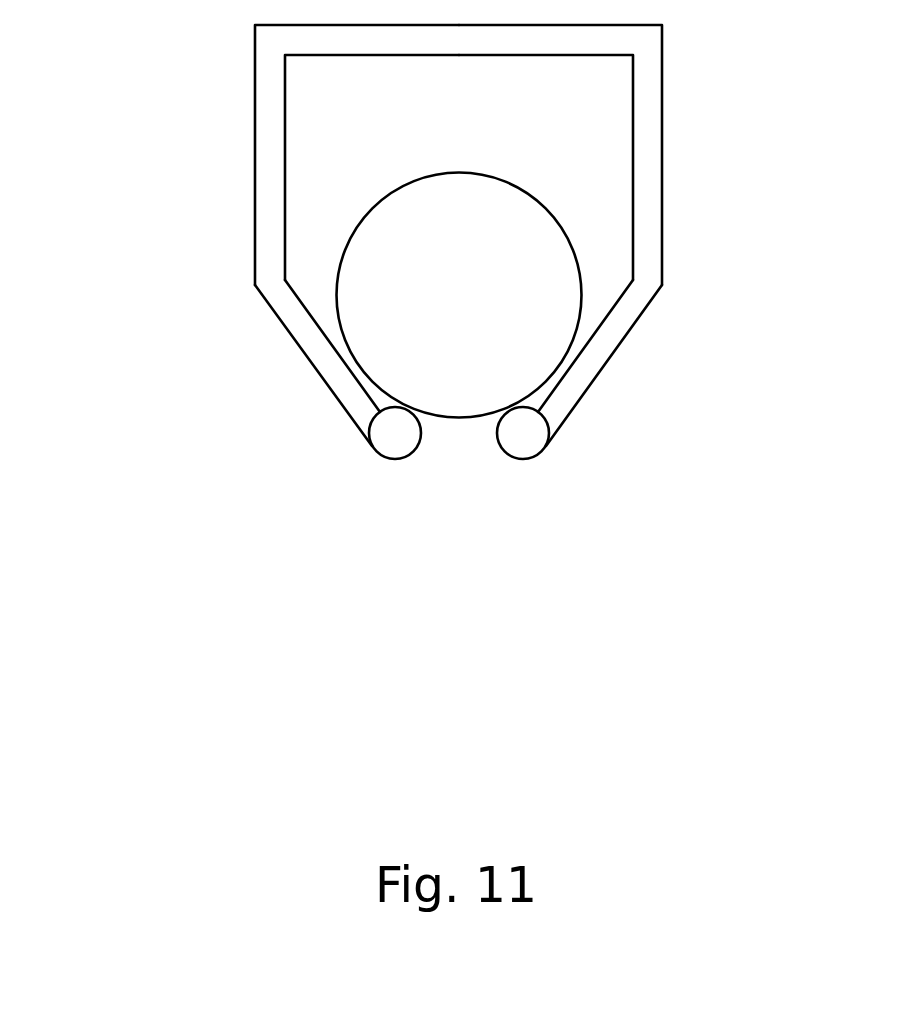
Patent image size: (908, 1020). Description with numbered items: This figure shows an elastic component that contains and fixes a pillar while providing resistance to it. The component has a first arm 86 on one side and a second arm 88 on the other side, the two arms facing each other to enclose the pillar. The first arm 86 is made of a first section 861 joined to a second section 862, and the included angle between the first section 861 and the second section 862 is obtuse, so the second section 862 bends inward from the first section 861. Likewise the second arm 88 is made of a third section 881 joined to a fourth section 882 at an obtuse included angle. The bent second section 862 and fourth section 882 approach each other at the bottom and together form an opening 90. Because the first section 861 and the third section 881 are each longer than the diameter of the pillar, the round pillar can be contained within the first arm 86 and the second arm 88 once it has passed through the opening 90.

The first arm 86 is at (245, 242).
The first section 861 is at (272, 163).
The second section 862 is at (299, 369).
The second arm 88 is at (673, 242).
The third section 881 is at (646, 163).
The fourth section 882 is at (617, 369).
The opening 90 is at (480, 475).